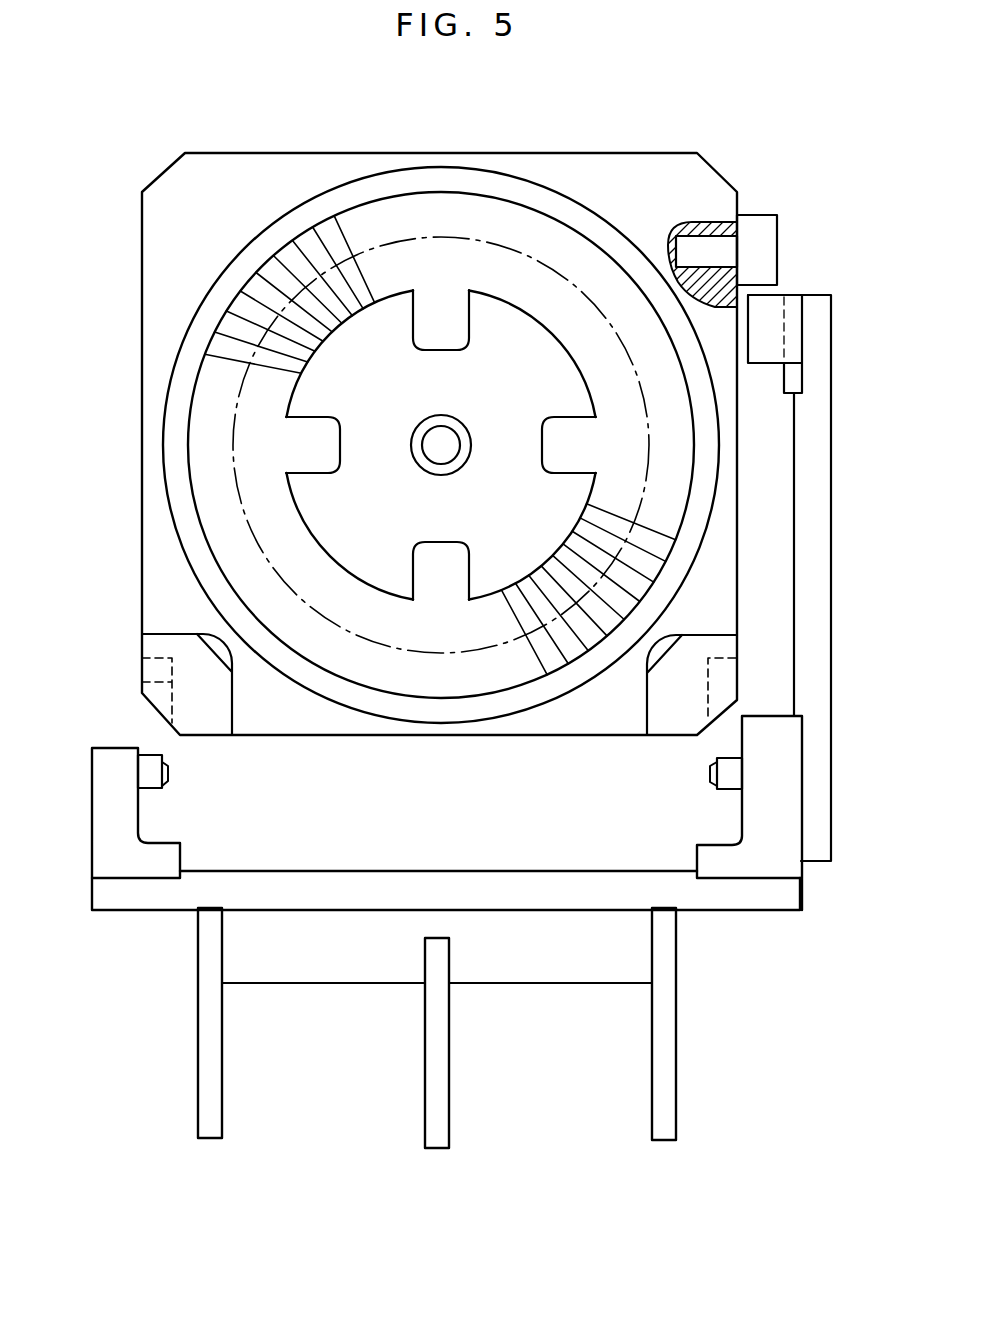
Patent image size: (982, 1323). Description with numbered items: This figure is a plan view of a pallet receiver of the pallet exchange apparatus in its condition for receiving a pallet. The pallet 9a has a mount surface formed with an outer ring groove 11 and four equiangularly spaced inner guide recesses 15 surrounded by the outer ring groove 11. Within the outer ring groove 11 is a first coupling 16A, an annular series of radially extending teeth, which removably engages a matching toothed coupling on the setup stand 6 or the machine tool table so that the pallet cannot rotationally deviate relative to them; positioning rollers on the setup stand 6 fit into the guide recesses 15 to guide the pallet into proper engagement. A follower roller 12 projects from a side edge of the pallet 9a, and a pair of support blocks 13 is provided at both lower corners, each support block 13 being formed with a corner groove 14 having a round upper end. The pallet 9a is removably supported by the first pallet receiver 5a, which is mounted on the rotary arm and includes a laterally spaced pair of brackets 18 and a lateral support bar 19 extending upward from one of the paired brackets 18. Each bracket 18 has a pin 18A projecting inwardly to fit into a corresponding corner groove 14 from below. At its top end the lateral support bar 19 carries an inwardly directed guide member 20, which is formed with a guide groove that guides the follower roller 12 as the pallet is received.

The first pallet receiver 5a is at (795, 926).
The setup stand 6 is at (762, 910).
The pallet 9a is at (575, 153).
The outer ring groove 11 is at (197, 437).
The follower roller 12 is at (748, 215).
The support block 13 is at (645, 707).
The corner groove 14 is at (140, 673).
The inner guide recess 15 is at (436, 335).
The first coupling 16A is at (332, 240).
The bracket 18 is at (103, 853).
The pin 18A is at (170, 772).
The lateral support bar 19 is at (812, 295).
The guide member 20 is at (763, 363).